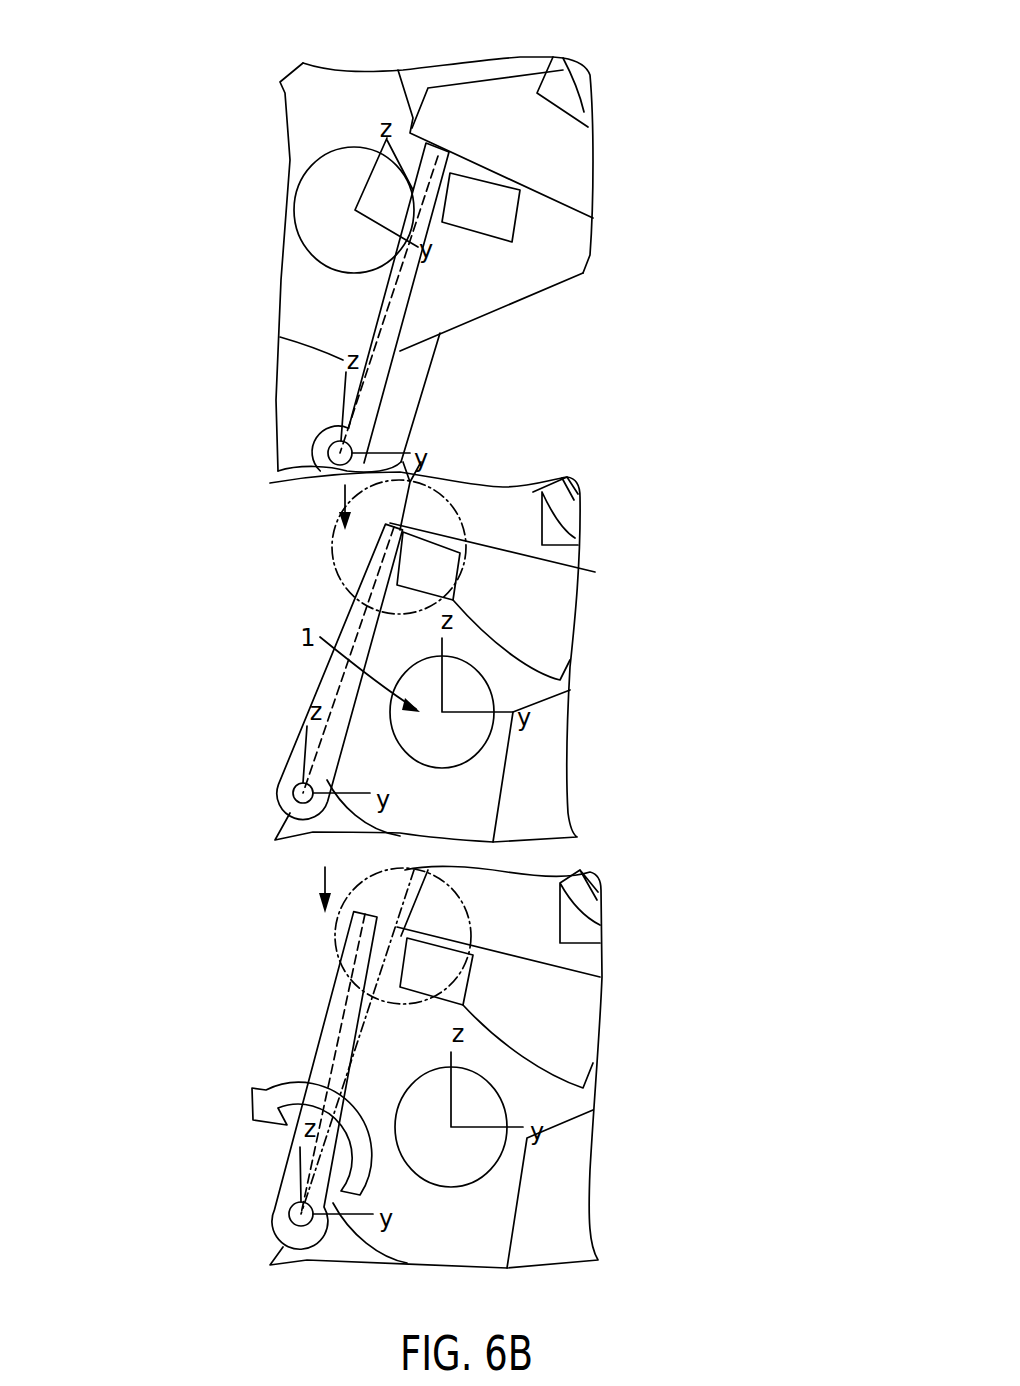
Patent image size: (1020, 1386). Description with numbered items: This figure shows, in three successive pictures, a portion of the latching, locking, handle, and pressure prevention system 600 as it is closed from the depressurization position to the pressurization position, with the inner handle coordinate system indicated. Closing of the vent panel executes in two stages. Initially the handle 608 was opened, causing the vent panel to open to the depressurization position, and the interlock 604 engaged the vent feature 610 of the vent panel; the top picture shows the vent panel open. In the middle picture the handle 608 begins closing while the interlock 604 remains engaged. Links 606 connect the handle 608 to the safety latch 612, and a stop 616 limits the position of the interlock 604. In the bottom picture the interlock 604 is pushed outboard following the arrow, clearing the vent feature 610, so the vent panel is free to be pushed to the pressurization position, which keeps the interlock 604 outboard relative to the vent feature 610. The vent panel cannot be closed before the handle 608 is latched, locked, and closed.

The latching, locking, handle, and pressure prevention system 600 is at (154, 78).
The interlock 604 is at (338, 400).
The links 606 is at (300, 445).
The handle 608 is at (320, 118).
The vent feature 610 is at (570, 152).
The safety latch 612 is at (558, 768).
The stop 616 is at (493, 202).